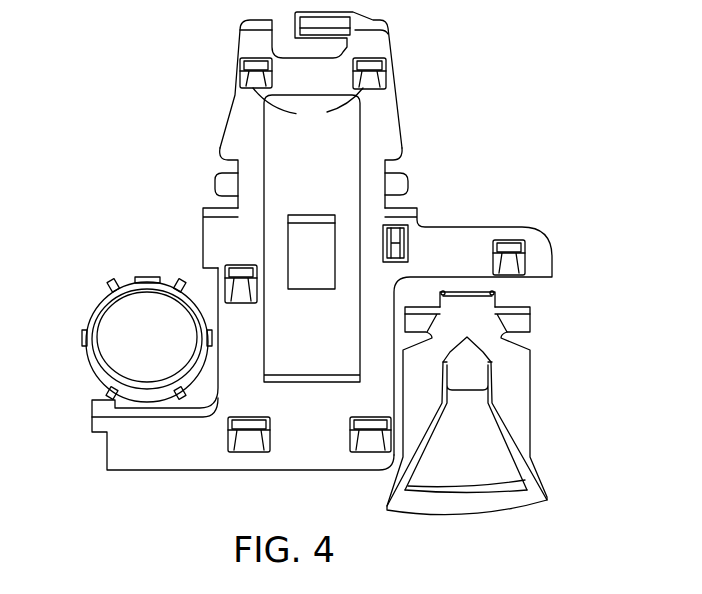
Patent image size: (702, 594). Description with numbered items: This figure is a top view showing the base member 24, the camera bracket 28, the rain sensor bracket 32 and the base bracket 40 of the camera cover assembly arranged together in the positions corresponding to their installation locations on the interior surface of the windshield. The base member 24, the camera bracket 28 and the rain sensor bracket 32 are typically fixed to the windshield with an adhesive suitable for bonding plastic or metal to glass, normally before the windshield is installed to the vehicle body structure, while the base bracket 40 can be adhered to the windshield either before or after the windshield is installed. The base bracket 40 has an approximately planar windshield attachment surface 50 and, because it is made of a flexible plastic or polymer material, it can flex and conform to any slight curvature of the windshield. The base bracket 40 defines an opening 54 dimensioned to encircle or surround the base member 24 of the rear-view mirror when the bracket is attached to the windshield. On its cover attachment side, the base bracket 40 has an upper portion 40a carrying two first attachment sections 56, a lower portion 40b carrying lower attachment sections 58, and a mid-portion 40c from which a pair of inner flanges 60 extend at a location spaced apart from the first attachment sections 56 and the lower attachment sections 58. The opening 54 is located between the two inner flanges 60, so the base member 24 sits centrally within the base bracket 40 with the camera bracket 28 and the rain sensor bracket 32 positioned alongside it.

The base member 24 is at (307, 215).
The camera bracket 28 is at (515, 378).
The rain sensor bracket 32 is at (98, 305).
The base bracket 40 is at (322, 263).
The upper portion 40a is at (225, 112).
The lower portion 40b is at (311, 440).
The mid-portion 40c is at (203, 227).
The windshield attachment surface 50 is at (370, 157).
The opening 54 is at (265, 149).
The first attachment sections 56 is at (308, 107).
The lower attachment sections 58 is at (243, 300).
The inner flanges 60 is at (219, 187).